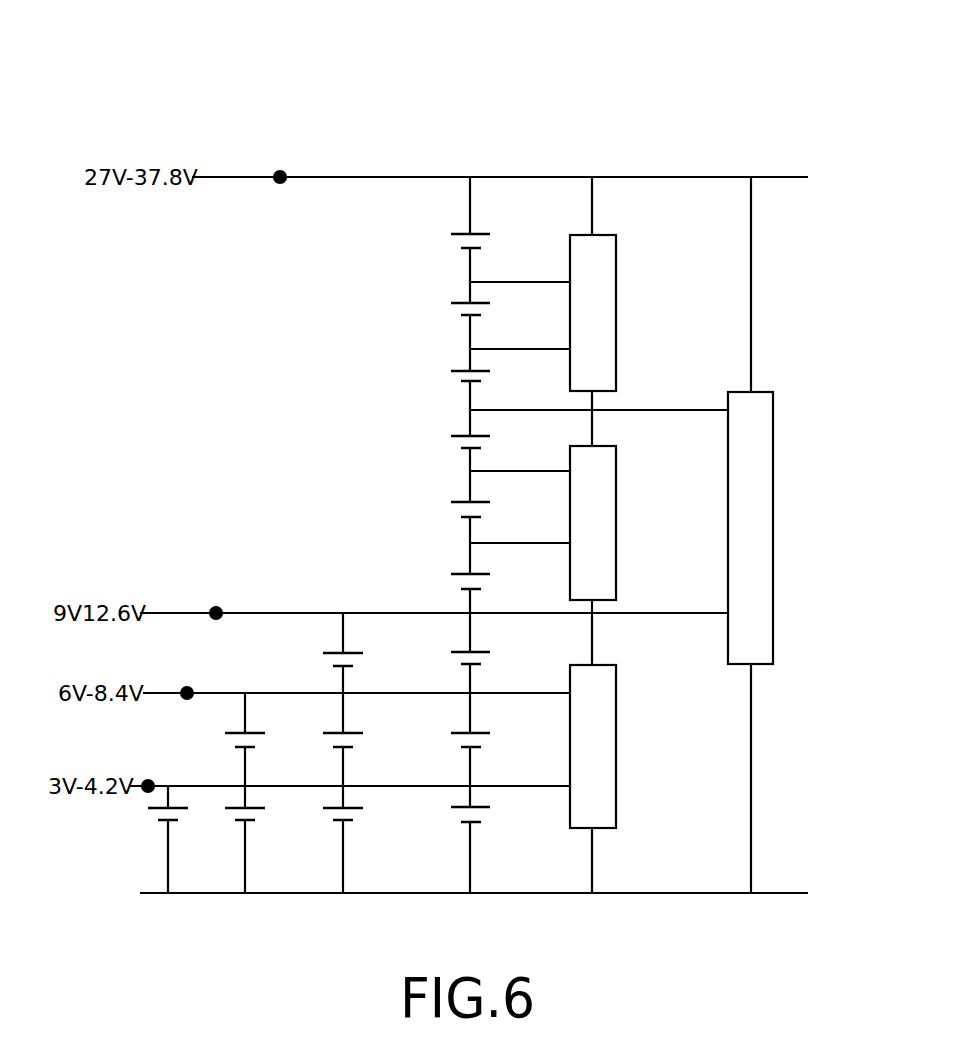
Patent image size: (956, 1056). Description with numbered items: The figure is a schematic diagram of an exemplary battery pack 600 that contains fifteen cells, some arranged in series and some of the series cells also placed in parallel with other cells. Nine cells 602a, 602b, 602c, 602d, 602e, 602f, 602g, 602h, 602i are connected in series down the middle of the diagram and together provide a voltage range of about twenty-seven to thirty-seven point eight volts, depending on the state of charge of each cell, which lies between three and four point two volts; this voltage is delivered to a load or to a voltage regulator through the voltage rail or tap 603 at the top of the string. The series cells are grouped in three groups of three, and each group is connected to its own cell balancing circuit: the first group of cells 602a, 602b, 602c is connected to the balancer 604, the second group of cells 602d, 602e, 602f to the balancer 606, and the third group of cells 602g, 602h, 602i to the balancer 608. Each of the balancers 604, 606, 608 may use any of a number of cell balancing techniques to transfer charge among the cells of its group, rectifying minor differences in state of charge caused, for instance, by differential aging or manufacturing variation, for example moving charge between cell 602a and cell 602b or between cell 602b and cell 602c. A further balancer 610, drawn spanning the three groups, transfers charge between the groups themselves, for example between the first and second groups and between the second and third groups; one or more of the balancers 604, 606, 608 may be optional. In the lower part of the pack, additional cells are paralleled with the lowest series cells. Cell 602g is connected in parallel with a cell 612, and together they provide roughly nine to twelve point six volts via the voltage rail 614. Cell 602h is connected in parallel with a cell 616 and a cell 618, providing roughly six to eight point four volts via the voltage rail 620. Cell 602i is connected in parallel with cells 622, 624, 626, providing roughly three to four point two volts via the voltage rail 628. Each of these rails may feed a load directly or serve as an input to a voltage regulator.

The battery pack 600 is at (327, 32).
The voltage rail 603 is at (278, 170).
The cell 602a is at (451, 244).
The cell 602b is at (451, 313).
The cell 602c is at (451, 378).
The cell 602d is at (451, 446).
The cell 602e is at (445, 513).
The cell 602f is at (445, 584).
The cell 602g is at (453, 660).
The cell 602h is at (455, 741).
The cell 602i is at (458, 820).
The cell balancing circuit 604 is at (617, 287).
The cell balancing circuit 606 is at (617, 516).
The cell balancing circuit 608 is at (617, 741).
The balancer 610 is at (774, 508).
The cell 612 is at (320, 659).
The voltage rail 614 is at (216, 606).
The cell 616 is at (325, 743).
The cell 618 is at (228, 743).
The voltage rail 620 is at (187, 687).
The cell 622 is at (328, 818).
The cell 624 is at (230, 818).
The cell 626 is at (153, 817).
The voltage rail 628 is at (146, 782).